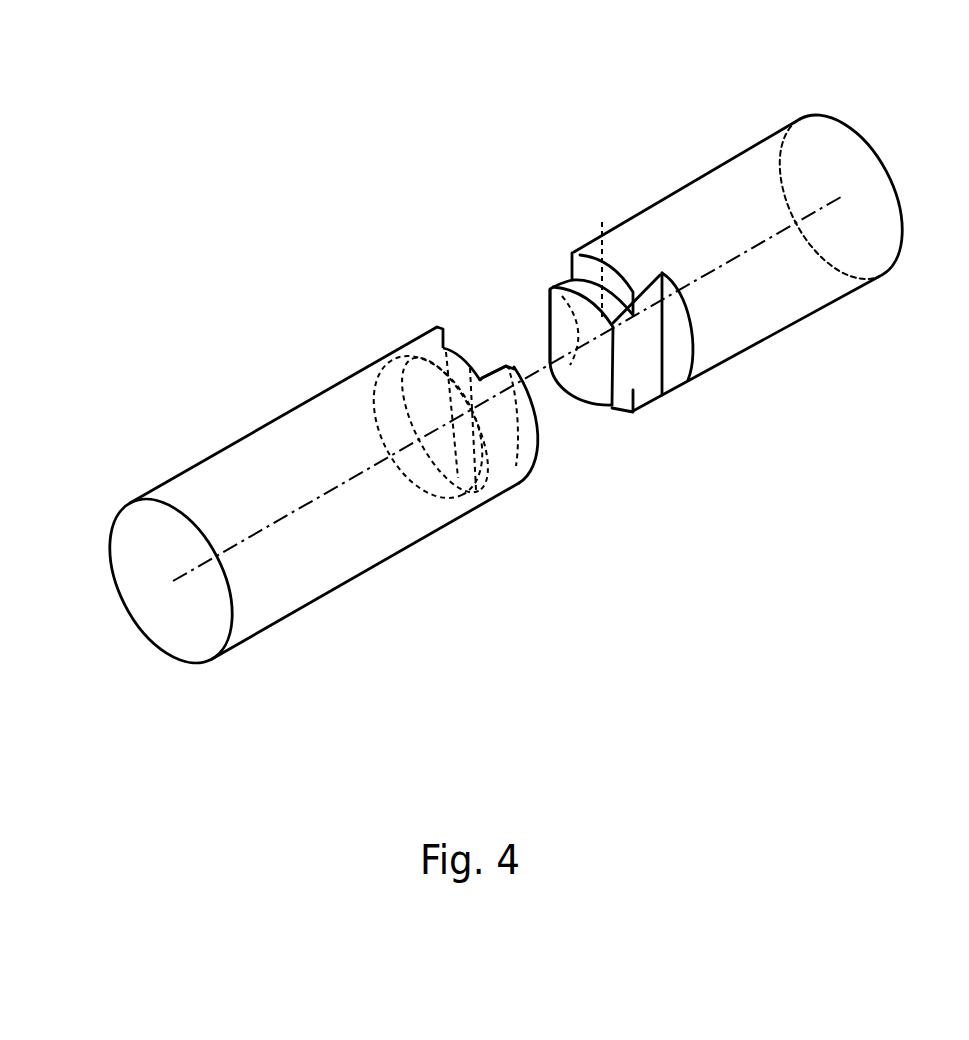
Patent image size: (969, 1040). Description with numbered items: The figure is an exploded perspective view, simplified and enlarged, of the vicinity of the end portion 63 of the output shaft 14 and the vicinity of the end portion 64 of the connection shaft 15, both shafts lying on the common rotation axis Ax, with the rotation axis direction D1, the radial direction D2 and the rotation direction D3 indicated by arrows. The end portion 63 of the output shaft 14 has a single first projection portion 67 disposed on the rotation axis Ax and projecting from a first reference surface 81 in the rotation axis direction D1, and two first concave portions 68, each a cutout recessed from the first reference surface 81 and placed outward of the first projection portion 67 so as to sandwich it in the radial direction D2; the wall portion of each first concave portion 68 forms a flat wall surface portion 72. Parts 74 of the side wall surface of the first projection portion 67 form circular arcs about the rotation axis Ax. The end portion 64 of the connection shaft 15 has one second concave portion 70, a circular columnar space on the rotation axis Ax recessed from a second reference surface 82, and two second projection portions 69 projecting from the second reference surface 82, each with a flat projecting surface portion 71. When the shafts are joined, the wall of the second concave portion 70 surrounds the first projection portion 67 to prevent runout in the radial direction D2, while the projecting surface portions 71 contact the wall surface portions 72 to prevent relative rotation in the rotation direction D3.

The output shaft 14 is at (700, 141).
The connection shaft 15 is at (231, 412).
The end portion of the output shaft 63 is at (643, 448).
The end portion of the connection shaft 64 is at (524, 512).
The first projection portion 67 is at (560, 333).
The first concave portion 68 is at (563, 290).
The second projection portion 69 is at (388, 380).
The second concave portion 70 is at (488, 503).
The projecting surface portion 71 is at (436, 328).
The wall surface portion 72 is at (668, 272).
The part of side wall surface of the first projection portion 74 is at (616, 300).
The first reference surface 81 is at (588, 255).
The second reference surface 82 is at (462, 352).
The rotation axis Ax is at (748, 253).
The rotation axis direction D1 is at (416, 610).
The radial direction D2 is at (216, 608).
The rotation direction D3 is at (75, 697).